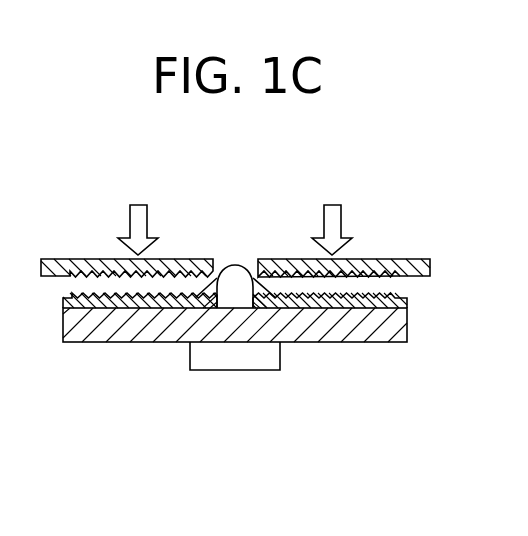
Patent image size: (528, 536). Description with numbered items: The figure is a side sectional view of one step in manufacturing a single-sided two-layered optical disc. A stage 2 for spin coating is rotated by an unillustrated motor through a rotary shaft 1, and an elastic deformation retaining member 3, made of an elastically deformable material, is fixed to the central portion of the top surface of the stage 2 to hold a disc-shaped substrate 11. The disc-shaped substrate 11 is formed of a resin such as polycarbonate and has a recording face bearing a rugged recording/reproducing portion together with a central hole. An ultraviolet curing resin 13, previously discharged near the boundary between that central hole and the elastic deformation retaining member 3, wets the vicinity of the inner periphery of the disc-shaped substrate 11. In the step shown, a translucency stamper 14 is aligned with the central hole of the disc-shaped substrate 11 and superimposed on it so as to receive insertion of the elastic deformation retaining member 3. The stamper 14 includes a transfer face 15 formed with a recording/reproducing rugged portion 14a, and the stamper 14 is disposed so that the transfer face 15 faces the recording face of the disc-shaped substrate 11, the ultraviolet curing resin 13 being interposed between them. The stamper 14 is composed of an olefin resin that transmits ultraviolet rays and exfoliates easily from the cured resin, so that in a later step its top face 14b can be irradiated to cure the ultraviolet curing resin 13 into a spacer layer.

The rotary shaft 1 is at (230, 372).
The stage 2 is at (407, 333).
The elastic deformation retaining member 3 is at (237, 267).
The disc-shaped substrate 11 is at (407, 300).
The ultraviolet curing resin 13 is at (262, 288).
The translucency stamper 14 is at (268, 298).
The recording/reproducing rugged portion 14a is at (77, 278).
The top face 14b is at (390, 272).
The transfer face 15 is at (397, 277).